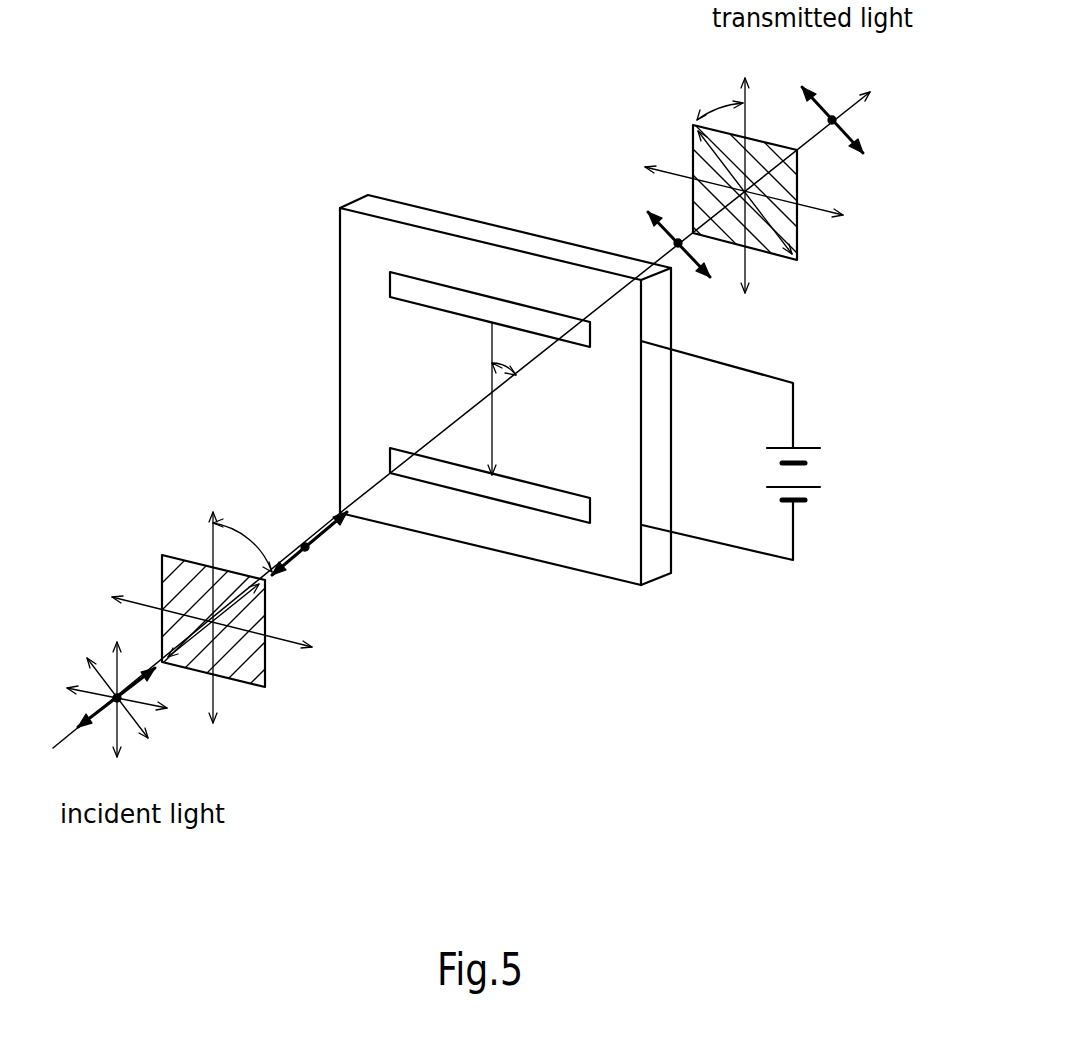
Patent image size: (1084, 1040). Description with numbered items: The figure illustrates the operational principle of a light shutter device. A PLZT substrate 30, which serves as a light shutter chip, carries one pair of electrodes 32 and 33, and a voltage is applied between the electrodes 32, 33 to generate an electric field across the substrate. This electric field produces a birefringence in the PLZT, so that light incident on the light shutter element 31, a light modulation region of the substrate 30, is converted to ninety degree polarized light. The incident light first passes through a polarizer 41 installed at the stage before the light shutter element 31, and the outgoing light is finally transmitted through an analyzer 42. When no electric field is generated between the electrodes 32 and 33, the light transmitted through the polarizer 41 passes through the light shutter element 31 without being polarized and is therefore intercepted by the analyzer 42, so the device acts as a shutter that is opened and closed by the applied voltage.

The PLZT substrate 30 is at (487, 223).
The light shutter element 31 is at (482, 392).
The electrode 32 is at (523, 300).
The electrode 33 is at (523, 507).
The polarizer 41 is at (175, 555).
The analyzer 42 is at (800, 175).